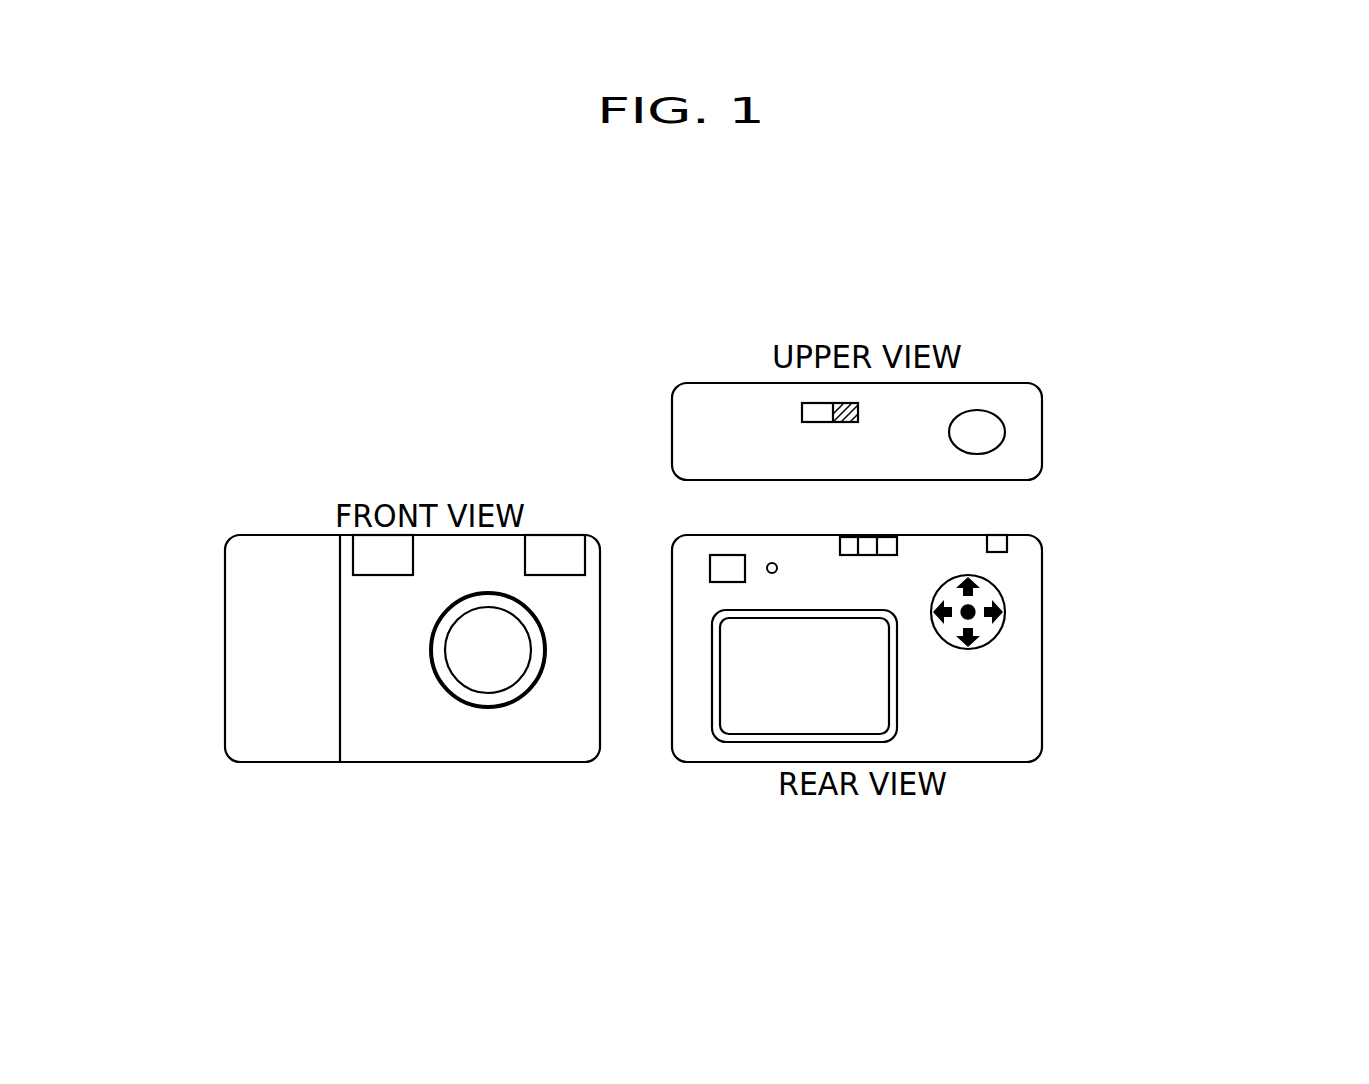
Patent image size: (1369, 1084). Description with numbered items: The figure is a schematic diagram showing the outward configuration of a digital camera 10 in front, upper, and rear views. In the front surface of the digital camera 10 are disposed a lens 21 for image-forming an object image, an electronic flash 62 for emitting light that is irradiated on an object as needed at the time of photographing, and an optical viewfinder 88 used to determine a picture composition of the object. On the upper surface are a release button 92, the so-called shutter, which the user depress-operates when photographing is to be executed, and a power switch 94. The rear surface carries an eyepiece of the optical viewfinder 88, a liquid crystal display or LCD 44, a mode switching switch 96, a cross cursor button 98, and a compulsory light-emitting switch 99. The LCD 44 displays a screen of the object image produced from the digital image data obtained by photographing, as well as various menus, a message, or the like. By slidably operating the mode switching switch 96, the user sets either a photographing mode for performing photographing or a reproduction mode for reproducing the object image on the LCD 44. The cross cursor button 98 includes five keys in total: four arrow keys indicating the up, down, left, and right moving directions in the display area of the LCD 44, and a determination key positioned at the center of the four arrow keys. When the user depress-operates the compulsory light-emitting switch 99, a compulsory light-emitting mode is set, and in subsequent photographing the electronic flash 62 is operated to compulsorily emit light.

The digital camera 10 is at (357, 407).
The electronic flash 62 is at (363, 558).
The optical viewfinder 88 is at (712, 558).
The lens 21 is at (482, 688).
The power switch 94 is at (808, 405).
The release button 92 is at (980, 422).
The mode switching switch 96 is at (927, 522).
The compulsory light-emitting switch 99 is at (1007, 545).
The liquid crystal display 44 is at (805, 731).
The cross cursor button 98 is at (958, 648).